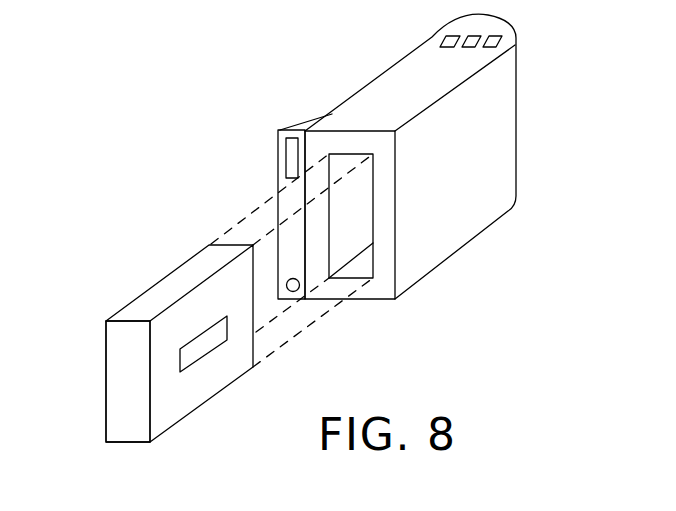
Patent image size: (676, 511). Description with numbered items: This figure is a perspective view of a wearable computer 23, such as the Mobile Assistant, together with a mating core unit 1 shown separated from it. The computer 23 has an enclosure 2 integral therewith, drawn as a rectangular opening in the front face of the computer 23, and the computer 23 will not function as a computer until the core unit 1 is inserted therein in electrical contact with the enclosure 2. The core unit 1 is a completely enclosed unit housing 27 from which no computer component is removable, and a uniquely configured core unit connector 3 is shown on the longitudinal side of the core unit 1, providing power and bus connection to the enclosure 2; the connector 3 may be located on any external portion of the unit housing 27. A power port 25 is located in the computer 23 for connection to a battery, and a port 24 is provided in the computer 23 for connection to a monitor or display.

The core unit 1 is at (153, 354).
The enclosure 2 is at (358, 221).
The core unit connector 3 is at (221, 327).
The wearable computer 23 is at (516, 137).
The port 24 is at (292, 138).
The power port 25 is at (294, 292).
The unit housing 27 is at (118, 367).